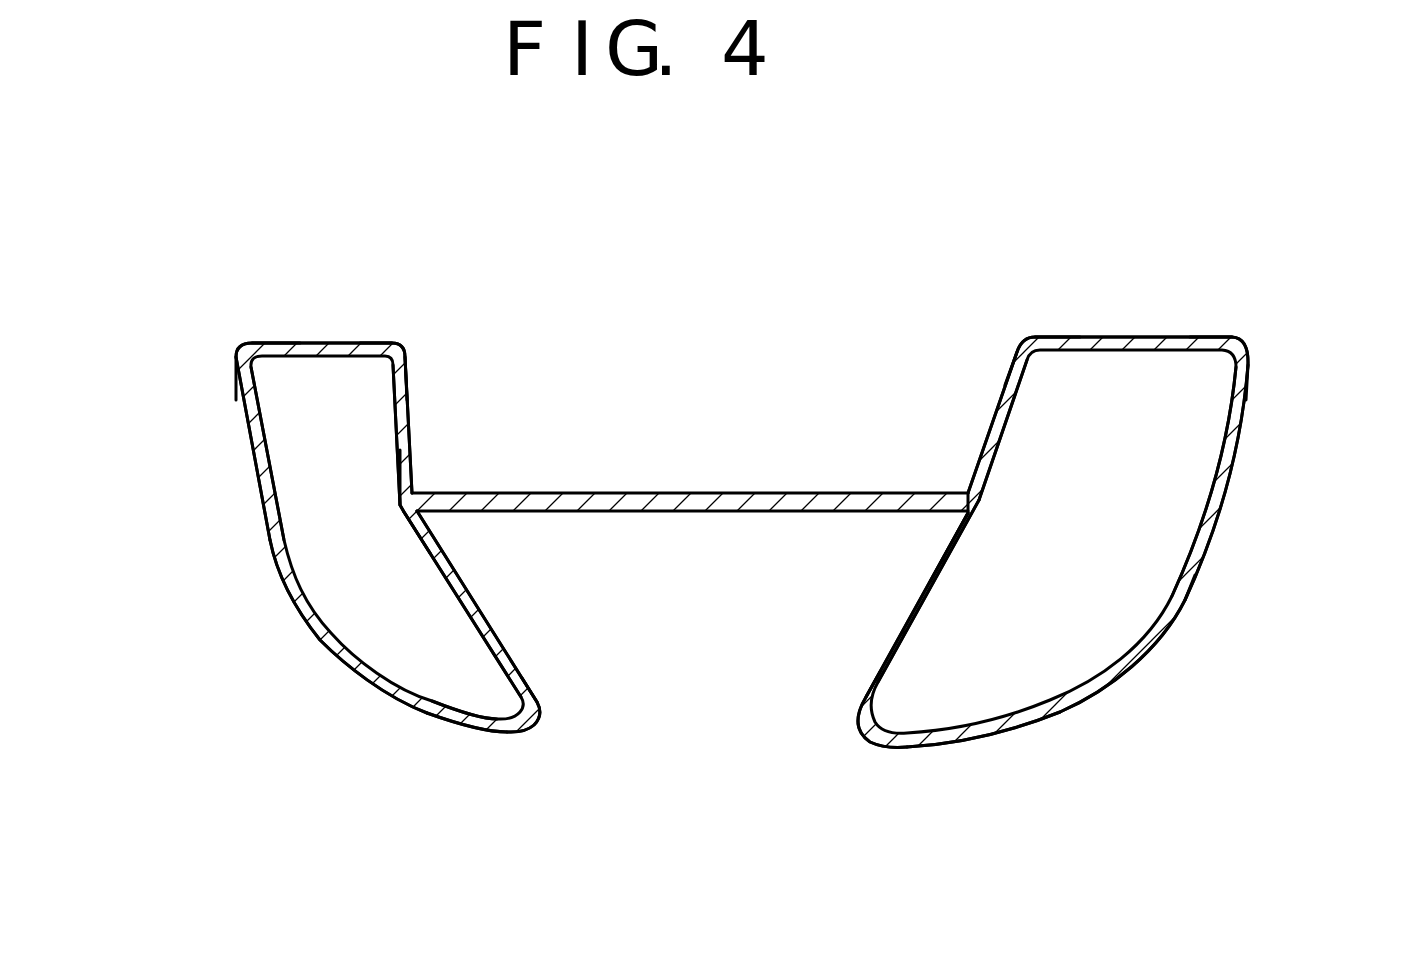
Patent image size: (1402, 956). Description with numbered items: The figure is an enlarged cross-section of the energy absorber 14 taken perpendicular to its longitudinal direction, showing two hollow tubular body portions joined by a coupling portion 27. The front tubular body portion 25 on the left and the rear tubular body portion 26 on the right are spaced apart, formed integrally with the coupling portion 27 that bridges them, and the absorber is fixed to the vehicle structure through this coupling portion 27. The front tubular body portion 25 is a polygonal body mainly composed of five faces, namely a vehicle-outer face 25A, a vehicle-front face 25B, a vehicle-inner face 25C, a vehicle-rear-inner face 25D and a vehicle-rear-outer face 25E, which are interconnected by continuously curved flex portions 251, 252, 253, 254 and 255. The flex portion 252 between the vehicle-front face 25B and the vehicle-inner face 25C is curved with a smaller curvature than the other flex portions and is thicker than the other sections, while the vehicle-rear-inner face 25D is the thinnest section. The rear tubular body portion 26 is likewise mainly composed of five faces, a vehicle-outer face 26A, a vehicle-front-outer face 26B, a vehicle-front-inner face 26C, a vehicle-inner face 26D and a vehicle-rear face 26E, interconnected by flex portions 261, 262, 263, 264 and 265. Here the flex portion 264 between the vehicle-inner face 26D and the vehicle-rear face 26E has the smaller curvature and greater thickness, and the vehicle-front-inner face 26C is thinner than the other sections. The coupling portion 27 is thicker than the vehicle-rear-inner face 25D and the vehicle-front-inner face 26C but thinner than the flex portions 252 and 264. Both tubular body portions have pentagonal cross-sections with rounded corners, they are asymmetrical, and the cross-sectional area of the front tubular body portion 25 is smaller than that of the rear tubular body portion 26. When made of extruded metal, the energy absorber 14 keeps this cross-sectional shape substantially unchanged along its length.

The energy absorber 14 is at (873, 387).
The front tubular body portion 25 is at (268, 567).
The vehicle-outer face 25A is at (318, 343).
The vehicle-front face 25B is at (248, 455).
The vehicle-inner face 25C is at (467, 723).
The vehicle-rear-inner face 25D is at (480, 600).
The vehicle-rear-outer face 25E is at (413, 417).
The flex portion 251 is at (245, 345).
The flex portion 252 is at (320, 655).
The flex portion 253 is at (530, 713).
The flex portion 254 is at (413, 490).
The flex portion 255 is at (407, 348).
The rear tubular body portion 26 is at (1183, 560).
The vehicle-outer face 26A is at (1150, 337).
The vehicle-front-outer face 26B is at (987, 428).
The vehicle-front-inner face 26C is at (892, 635).
The vehicle-inner face 26D is at (952, 745).
The vehicle-rear face 26E is at (1238, 430).
The flex portion 261 is at (1027, 337).
The flex portion 262 is at (962, 510).
The flex portion 263 is at (863, 747).
The flex portion 264 is at (1090, 690).
The flex portion 265 is at (1245, 343).
The coupling portion 27 is at (678, 493).